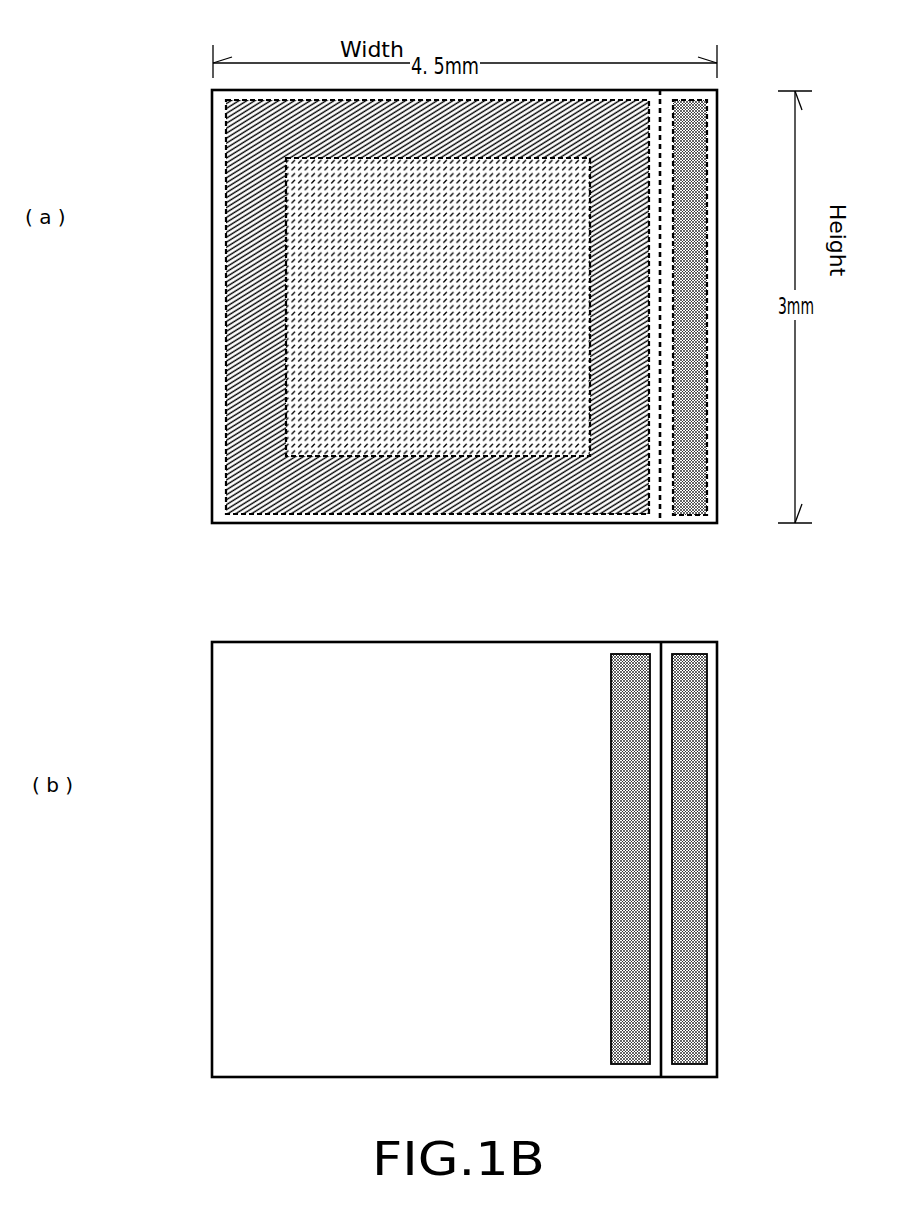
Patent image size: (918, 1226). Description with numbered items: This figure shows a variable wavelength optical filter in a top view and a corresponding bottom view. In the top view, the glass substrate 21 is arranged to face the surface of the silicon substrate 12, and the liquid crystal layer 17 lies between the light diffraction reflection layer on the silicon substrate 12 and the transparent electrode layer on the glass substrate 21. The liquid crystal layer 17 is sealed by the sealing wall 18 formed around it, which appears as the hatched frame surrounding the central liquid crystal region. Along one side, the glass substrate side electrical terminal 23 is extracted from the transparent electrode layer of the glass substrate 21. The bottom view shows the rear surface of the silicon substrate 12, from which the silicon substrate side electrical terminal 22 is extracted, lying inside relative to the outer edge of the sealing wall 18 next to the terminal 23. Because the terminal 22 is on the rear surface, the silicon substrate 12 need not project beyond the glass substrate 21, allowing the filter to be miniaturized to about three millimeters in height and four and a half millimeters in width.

The silicon substrate 12 is at (260, 871).
The liquid crystal layer 17 is at (322, 375).
The sealing wall 18 is at (257, 450).
The glass substrate 21 is at (342, 311).
The silicon substrate side electrical terminal 22 is at (639, 936).
The glass substrate side electrical terminal 23 is at (692, 263).